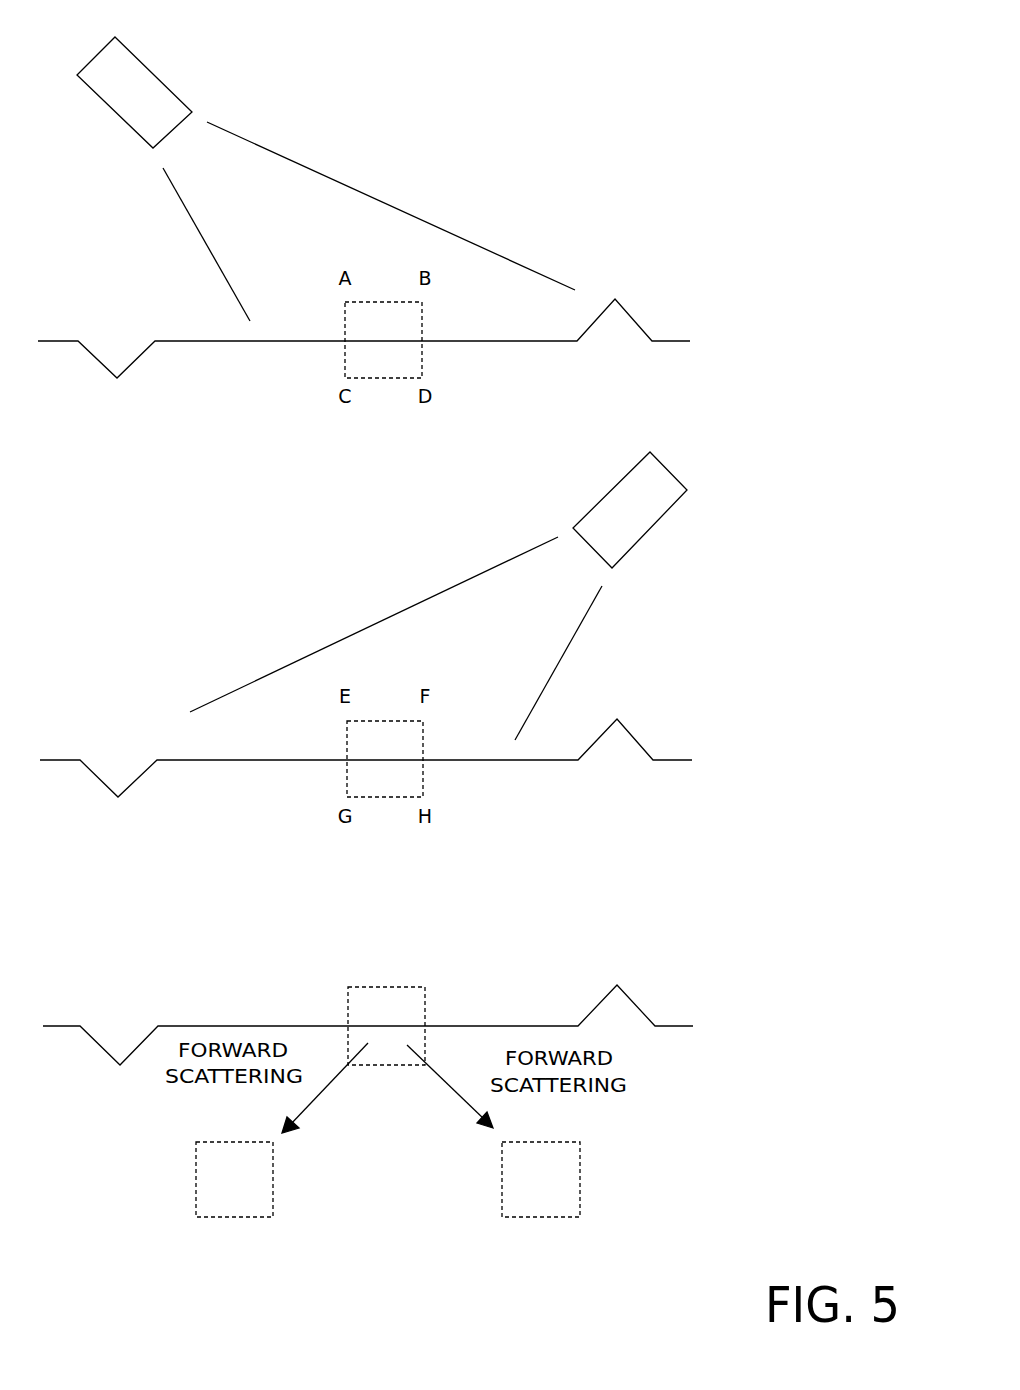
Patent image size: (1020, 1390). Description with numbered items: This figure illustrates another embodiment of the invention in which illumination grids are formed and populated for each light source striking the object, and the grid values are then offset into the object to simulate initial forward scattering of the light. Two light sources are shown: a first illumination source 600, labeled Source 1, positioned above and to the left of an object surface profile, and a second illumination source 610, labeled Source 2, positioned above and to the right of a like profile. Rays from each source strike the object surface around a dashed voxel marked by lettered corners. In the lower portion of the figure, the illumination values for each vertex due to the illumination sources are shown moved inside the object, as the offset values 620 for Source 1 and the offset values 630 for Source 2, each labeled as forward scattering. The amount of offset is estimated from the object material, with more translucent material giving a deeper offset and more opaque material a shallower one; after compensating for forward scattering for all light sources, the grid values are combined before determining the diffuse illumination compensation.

The illumination source 600 is at (152, 72).
The illumination source 610 is at (668, 468).
The offset illumination values 620 is at (273, 1180).
The offset illumination values 630 is at (582, 1177).